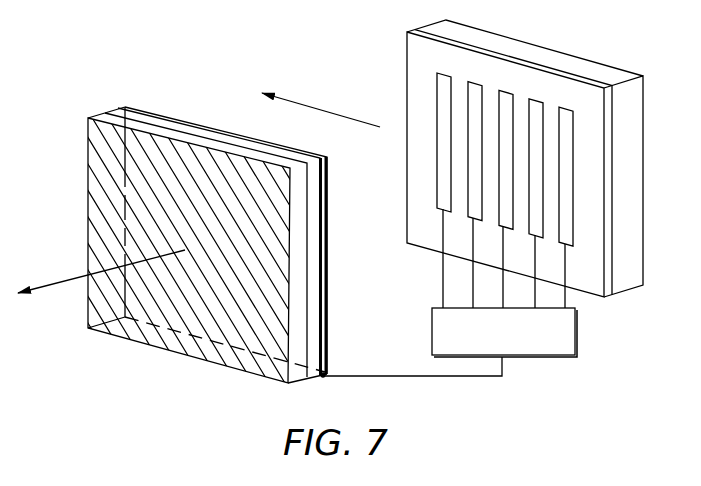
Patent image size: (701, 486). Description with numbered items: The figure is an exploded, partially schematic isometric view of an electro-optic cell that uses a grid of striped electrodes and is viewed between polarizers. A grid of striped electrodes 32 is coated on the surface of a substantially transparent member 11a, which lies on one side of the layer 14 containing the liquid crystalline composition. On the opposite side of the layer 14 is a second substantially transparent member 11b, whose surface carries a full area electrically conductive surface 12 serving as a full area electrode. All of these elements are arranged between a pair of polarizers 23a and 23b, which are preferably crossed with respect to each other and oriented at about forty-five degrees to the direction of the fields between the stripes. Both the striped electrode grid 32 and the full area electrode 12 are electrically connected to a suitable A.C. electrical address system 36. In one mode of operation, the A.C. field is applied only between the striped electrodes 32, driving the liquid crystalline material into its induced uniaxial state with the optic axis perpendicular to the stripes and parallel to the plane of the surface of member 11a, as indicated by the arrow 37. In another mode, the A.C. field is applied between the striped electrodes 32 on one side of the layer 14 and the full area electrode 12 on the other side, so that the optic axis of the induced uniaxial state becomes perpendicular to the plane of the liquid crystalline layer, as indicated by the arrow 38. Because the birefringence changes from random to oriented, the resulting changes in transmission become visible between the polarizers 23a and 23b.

The substantially transparent member 11a is at (406, 38).
The substantially transparent member 11b is at (122, 108).
The full area electrically conductive surface 12 is at (128, 108).
The layer containing the liquid crystalline composition 14 is at (141, 107).
The polarizer 23a is at (460, 29).
The polarizer 23b is at (100, 115).
The striped electrodes 32 is at (506, 89).
The A.C. electrical address system 36 is at (576, 317).
The arrow indicating optic axis direction 37 is at (313, 106).
The arrow indicating optic axis direction 38 is at (52, 280).